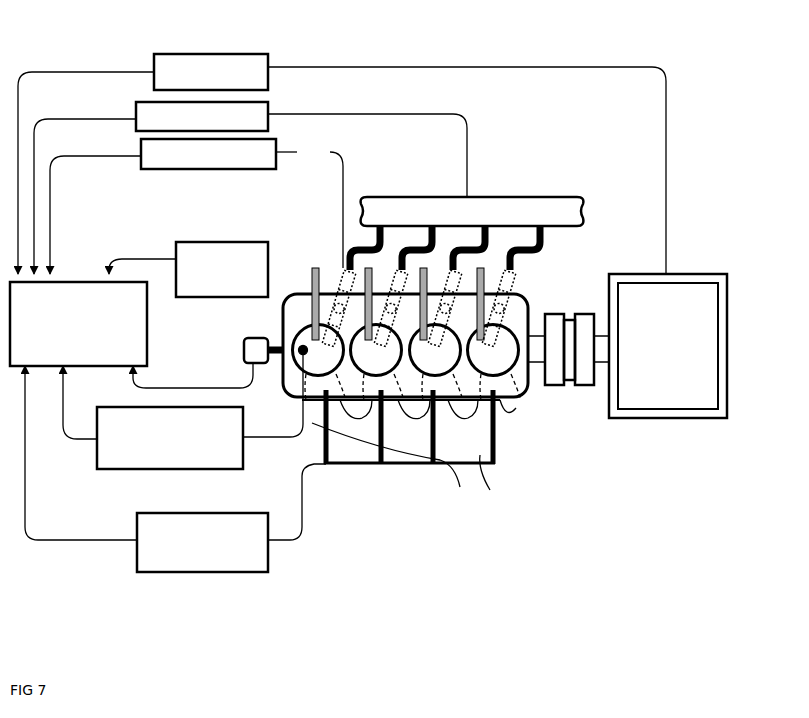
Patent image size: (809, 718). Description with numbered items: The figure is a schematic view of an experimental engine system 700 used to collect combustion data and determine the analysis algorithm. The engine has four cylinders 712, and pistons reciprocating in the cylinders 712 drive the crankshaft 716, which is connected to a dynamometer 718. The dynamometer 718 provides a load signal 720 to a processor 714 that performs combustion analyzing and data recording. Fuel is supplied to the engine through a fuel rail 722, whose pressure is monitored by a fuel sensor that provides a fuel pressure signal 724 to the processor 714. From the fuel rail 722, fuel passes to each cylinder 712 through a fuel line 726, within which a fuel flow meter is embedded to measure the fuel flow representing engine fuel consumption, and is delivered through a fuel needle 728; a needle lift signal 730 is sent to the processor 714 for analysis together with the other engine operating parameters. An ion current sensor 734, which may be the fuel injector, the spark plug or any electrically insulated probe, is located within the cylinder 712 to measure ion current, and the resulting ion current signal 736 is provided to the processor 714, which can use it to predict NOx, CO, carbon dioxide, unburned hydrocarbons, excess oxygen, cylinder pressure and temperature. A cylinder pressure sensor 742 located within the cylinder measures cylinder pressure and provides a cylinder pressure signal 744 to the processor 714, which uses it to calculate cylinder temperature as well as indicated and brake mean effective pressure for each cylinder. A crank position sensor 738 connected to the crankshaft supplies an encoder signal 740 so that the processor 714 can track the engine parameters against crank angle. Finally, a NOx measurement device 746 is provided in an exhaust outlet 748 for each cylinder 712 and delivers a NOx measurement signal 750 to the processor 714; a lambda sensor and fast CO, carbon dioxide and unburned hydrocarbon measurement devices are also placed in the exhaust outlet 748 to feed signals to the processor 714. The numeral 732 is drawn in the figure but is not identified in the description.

The engine system 700 is at (713, 145).
The cylinders 712 is at (283, 303).
The processor 714 is at (72, 282).
The crankshaft 716 is at (566, 386).
The dynamometer 718 is at (727, 355).
The load signal 720 is at (228, 54).
The fuel rail 722 is at (526, 197).
The fuel pressure signal 724 is at (270, 110).
The fuel line 726 is at (352, 268).
The fuel needle 728 is at (338, 268).
The needle lift signal 730 is at (277, 141).
The ion current sensor 732 is at (340, 262).
The ion current sensor 734 is at (333, 312).
The ion current signal 736 is at (178, 242).
The crank position sensor 738 is at (244, 342).
The encoder signal 740 is at (245, 366).
The cylinder pressure sensor 742 is at (296, 388).
The cylinder pressure signal 744 is at (143, 469).
The NOx measurement device 746 is at (302, 437).
The exhaust outlet 748 is at (358, 428).
The NOx measurement signal 750 is at (197, 573).